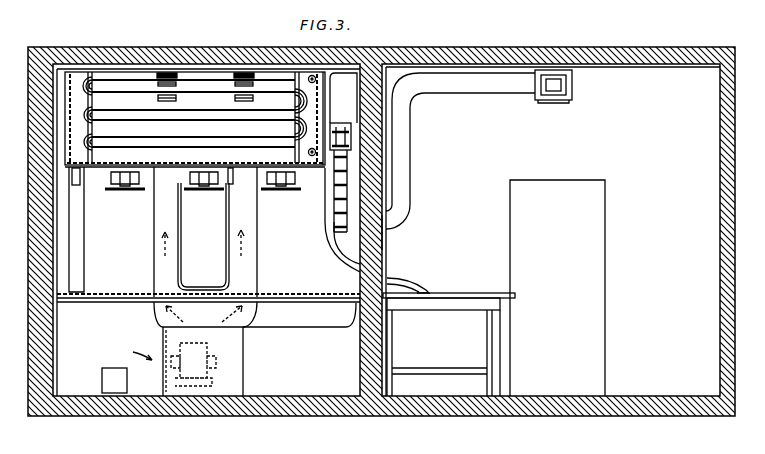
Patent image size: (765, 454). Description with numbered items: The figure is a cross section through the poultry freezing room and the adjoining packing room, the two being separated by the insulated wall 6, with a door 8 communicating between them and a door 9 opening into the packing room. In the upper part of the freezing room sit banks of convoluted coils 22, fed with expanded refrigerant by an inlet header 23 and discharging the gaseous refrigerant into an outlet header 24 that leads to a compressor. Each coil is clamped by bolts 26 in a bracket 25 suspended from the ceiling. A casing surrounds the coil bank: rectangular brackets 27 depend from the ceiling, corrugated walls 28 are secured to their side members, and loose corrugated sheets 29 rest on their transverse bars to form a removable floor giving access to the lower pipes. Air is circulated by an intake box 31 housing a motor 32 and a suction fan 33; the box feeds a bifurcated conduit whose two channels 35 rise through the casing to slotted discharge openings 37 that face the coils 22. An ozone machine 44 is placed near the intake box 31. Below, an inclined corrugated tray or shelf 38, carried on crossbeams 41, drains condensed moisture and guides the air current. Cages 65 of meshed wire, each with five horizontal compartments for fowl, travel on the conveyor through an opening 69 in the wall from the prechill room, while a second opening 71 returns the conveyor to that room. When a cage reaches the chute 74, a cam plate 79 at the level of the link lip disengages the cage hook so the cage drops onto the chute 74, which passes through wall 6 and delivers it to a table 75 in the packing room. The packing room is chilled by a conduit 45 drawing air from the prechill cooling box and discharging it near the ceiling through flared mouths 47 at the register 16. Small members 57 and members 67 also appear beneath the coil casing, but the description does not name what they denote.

The wall 6 is at (383, 246).
The door 8 is at (384, 266).
The door 9 is at (606, 247).
The register outlet 16 is at (572, 87).
The convoluted coils 22 is at (128, 73).
The inlet header 23 is at (324, 191).
The outlet header 24 is at (316, 70).
The bracket 25 is at (88, 76).
The bolts 26 is at (300, 128).
The rectangular brackets 27 is at (319, 99).
The walls 28 is at (92, 97).
The corrugated sheets 29 is at (100, 168).
The intake box 31 is at (258, 358).
The motor 32 is at (205, 345).
The suction fan 33 is at (160, 346).
The channels 35 is at (154, 240).
The slotted discharge openings 37 is at (165, 73).
The tray or shelf 38 is at (297, 293).
The crossbeams 41 is at (304, 301).
The ozone machine 44 is at (117, 380).
The conduit 45 is at (410, 126).
The flared mouths 47 is at (553, 101).
The brackets 57 is at (75, 187).
The basket or cage 65 is at (333, 220).
The drip trays 67 is at (128, 191).
The opening 69 is at (84, 244).
The opening 71 is at (351, 129).
The chute 74 is at (343, 258).
The table 75 is at (458, 293).
The cam plate 79 is at (351, 148).